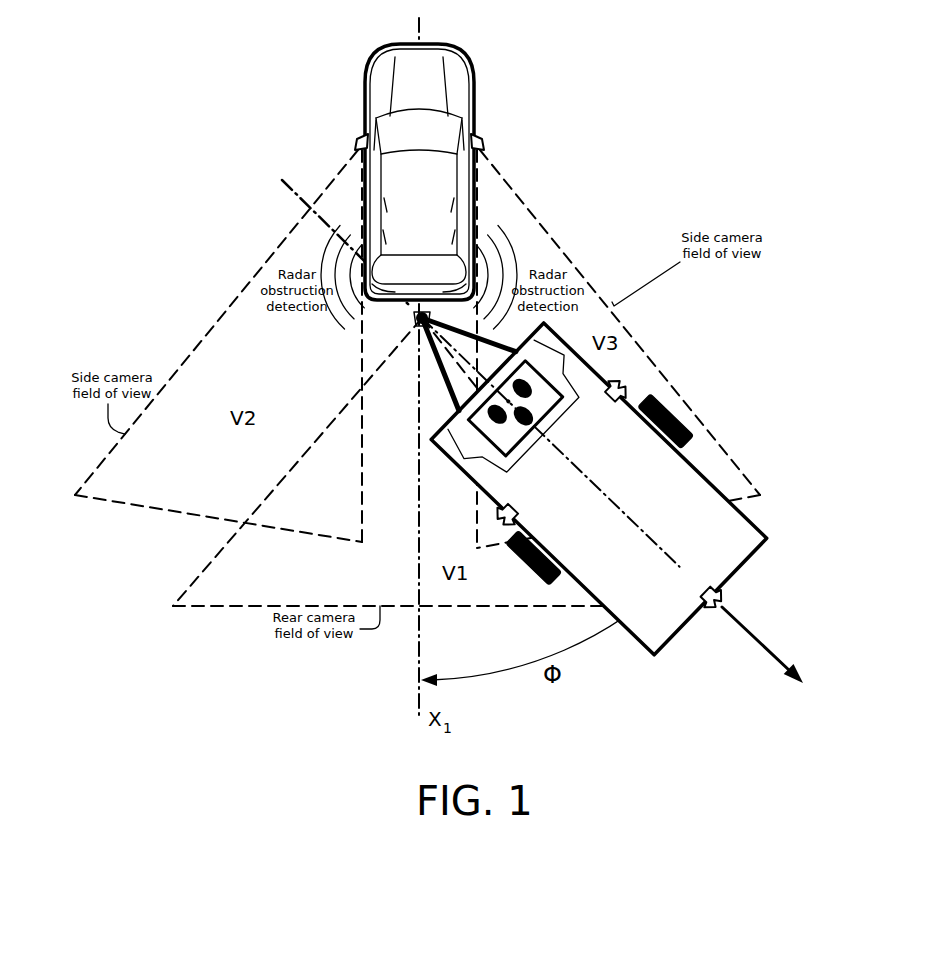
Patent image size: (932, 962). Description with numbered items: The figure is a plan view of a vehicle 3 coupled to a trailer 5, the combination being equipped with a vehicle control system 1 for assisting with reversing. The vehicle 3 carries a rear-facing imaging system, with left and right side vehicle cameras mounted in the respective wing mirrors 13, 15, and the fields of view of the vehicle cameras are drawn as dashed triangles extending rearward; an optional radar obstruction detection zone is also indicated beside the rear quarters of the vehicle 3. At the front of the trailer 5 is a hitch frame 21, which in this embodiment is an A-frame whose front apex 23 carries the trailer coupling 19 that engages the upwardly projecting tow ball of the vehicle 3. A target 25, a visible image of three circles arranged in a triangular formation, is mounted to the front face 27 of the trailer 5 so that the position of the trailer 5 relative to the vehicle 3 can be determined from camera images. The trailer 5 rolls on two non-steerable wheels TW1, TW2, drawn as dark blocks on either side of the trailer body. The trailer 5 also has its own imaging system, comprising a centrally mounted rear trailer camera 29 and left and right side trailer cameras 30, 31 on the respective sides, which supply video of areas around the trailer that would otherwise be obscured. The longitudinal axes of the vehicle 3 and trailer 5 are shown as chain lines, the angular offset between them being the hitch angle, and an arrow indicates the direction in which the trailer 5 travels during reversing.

The vehicle control system 1 is at (581, 380).
The vehicle 3 is at (455, 102).
The trailer 5 is at (686, 496).
The wing mirror 13 is at (357, 143).
The wing mirror 15 is at (485, 138).
The trailer coupling 19 is at (416, 318).
The hitch frame 21 is at (497, 343).
The front apex 23 is at (426, 316).
The target 25 is at (540, 397).
The front face 27 is at (478, 460).
The rear trailer camera 29 is at (716, 595).
The side trailer camera 30 is at (507, 517).
The side trailer camera 31 is at (618, 395).
The trailer wheel TW1 is at (532, 560).
The trailer wheel TW2 is at (672, 420).